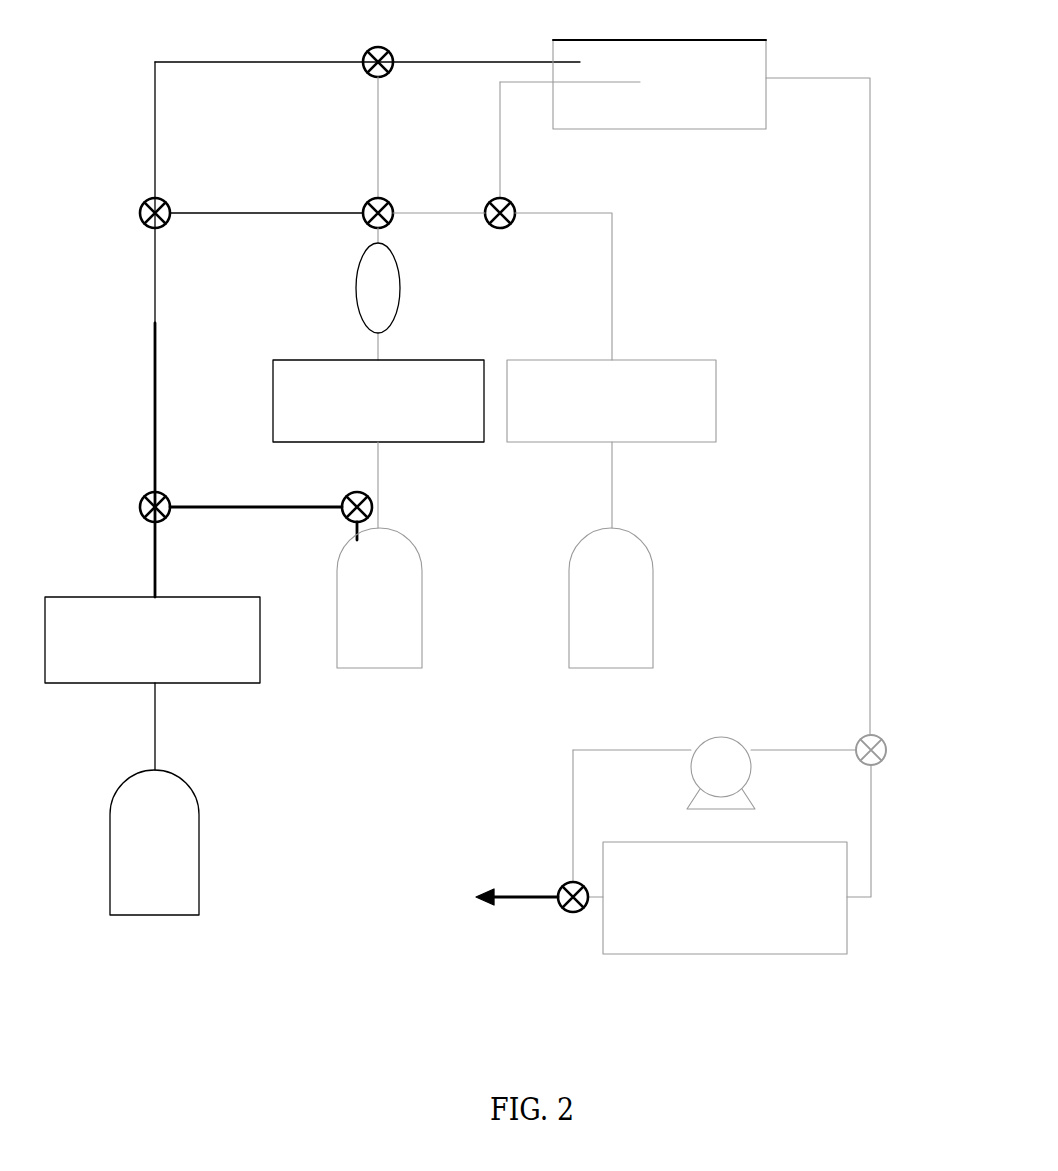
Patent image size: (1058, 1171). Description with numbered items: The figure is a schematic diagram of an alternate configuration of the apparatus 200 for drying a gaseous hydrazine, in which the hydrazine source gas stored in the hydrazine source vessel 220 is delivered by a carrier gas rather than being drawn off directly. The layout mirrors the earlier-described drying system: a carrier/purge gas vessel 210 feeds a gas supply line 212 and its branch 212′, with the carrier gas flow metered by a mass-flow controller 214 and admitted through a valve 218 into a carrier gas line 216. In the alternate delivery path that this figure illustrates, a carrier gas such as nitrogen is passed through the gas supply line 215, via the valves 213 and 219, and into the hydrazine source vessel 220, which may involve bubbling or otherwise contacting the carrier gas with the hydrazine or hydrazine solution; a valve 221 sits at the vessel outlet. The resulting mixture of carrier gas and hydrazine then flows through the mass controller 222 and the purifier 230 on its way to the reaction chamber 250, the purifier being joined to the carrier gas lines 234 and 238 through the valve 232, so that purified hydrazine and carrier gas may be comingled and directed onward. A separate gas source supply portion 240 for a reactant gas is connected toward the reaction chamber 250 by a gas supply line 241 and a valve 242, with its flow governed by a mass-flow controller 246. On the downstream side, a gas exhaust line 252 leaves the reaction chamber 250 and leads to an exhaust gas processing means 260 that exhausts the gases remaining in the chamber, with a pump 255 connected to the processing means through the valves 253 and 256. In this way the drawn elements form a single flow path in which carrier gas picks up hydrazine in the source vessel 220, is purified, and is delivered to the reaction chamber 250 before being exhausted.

The gas delivery system 200 is at (119, 128).
The first gas source 210 is at (197, 820).
The first supply line 212 is at (155, 265).
The first branch line 212′ is at (225, 62).
The valve 213 is at (142, 497).
The first mass flow controller 214 is at (178, 597).
The gas supply line 215 is at (282, 505).
The second supply line 216 is at (285, 213).
The supply line valve 218 is at (170, 204).
The valve 219 is at (343, 517).
The hydrazine source vessel 220 is at (420, 601).
The second source valve 221 is at (382, 503).
The mass controller 222 is at (410, 361).
The purifier 230 is at (358, 268).
The trap valve 232 is at (392, 204).
The bypass line 234 is at (500, 84).
The third supply line 238 is at (424, 217).
The third gas source 240 is at (654, 601).
The third source line 241 is at (612, 505).
The third supply valve 242 is at (512, 204).
The third mass flow controller 246 is at (678, 361).
The reaction chamber 250 is at (620, 129).
The exhaust line 252 is at (870, 412).
The exhaust valve 253 is at (880, 738).
The pump 255 is at (725, 738).
The outlet valve 256 is at (562, 910).
The abatement unit 260 is at (752, 954).